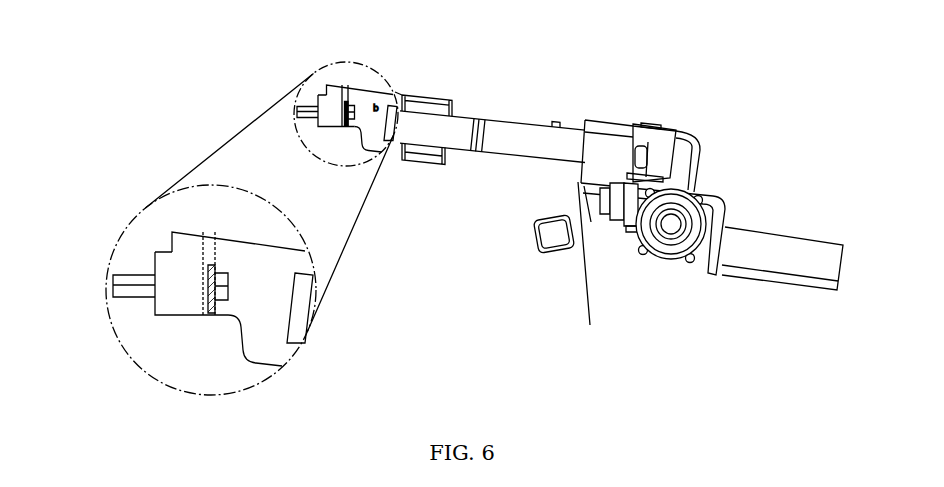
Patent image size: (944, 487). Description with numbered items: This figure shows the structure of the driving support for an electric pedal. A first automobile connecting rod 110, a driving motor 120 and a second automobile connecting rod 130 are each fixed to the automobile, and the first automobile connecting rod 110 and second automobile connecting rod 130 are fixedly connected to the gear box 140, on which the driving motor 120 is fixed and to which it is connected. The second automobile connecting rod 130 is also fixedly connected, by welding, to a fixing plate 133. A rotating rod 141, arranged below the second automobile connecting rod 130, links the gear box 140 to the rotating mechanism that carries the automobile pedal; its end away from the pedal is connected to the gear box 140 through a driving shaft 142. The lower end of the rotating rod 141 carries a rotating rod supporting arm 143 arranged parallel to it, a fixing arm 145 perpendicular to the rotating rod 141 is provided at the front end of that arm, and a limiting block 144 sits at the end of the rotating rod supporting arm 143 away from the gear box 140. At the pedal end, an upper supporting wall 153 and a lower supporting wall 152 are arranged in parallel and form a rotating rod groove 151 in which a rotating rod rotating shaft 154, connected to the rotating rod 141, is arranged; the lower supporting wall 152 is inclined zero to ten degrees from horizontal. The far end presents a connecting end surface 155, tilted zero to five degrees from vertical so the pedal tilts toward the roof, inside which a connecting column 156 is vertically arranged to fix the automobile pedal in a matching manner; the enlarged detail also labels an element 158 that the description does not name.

The first automobile connecting rod 110 is at (765, 252).
The driving motor 120 is at (673, 243).
The second automobile connecting rod 130 is at (550, 256).
The fixing plate 133 is at (590, 325).
The gear box 140 is at (627, 213).
The rotating rod 141 is at (507, 120).
The driving shaft 142 is at (657, 158).
The rotating rod supporting arm 143 is at (682, 130).
The limiting block 144 is at (650, 126).
The fixing arm 145 is at (588, 163).
The rotating rod groove 151 is at (395, 127).
The lower supporting wall 152 is at (399, 91).
The upper supporting wall 153 is at (440, 150).
The rotating rod rotating shaft 154 is at (428, 122).
The connecting end surface 155 is at (153, 258).
The connecting column 156 is at (117, 279).
The plate 158 is at (173, 315).